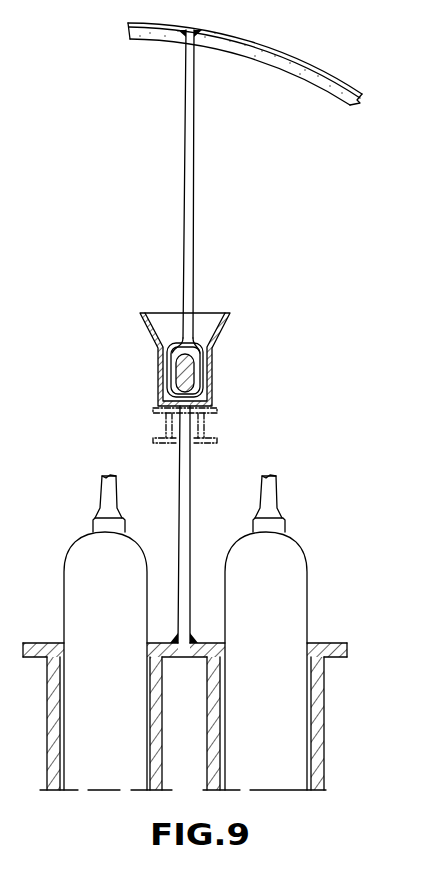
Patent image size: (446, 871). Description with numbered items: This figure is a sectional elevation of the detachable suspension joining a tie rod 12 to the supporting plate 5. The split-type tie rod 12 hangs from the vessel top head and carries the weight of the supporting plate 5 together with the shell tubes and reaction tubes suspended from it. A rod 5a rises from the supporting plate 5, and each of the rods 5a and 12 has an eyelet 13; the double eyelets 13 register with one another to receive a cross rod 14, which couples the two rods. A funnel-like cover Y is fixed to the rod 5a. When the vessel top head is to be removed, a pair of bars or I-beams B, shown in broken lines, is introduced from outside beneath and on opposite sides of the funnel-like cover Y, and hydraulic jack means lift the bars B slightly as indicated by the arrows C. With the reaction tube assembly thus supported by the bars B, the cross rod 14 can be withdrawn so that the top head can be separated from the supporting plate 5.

The tie rod 12 is at (193, 187).
The eyelet 13 is at (180, 343).
The cross rod 14 is at (185, 376).
The rod 5a is at (184, 548).
The supporting plate 5 is at (340, 643).
The funnel-like cover Y is at (203, 320).
The arrows indicating lifting direction C is at (138, 372).
The bar B is at (220, 418).